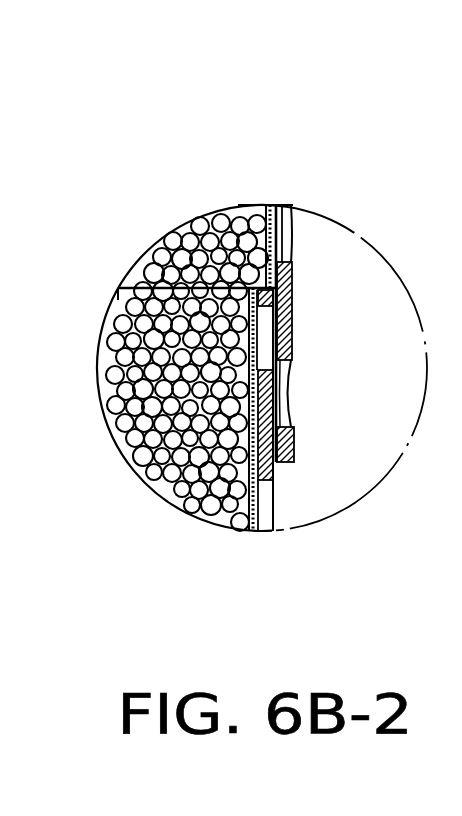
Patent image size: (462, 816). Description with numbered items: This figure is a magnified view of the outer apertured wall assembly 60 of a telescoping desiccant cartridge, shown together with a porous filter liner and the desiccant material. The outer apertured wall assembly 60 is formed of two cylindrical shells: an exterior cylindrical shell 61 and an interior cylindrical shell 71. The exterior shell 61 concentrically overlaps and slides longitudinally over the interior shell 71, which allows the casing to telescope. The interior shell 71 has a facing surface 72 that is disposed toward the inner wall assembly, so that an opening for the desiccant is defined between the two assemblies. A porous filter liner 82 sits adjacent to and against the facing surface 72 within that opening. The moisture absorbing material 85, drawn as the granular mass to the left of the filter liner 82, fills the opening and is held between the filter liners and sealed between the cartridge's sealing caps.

The outer apertured wall assembly 60 is at (306, 201).
The exterior cylindrical shell 61 is at (292, 289).
The interior cylindrical shell 71 is at (273, 470).
The facing surface 72 is at (226, 462).
The porous filter liner 82 is at (255, 336).
The moisture absorbing material 85 is at (130, 370).